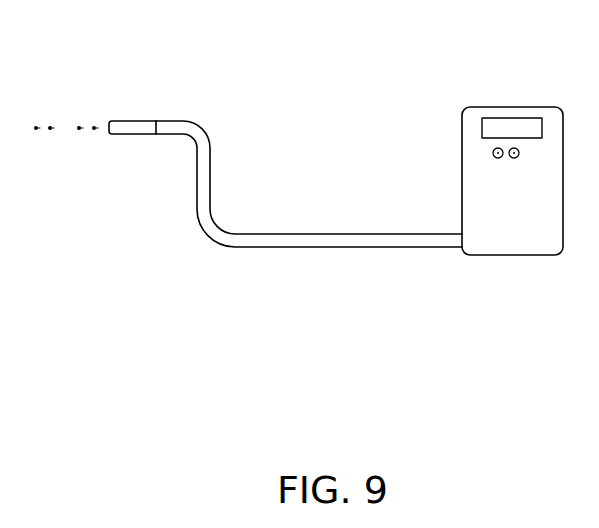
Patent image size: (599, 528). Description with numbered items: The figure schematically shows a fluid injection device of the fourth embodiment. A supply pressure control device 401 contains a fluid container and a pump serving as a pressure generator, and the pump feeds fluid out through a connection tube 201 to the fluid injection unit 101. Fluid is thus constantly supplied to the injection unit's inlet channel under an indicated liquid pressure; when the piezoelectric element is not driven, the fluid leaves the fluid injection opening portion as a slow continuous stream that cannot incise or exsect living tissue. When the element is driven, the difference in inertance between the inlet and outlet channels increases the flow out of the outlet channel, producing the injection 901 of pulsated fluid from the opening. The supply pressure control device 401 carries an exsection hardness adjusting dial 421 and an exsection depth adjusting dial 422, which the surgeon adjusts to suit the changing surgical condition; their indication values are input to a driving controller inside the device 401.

The fluid injection unit 101 is at (130, 126).
The connection tube 201 is at (210, 181).
The supply pressure control device 401 is at (471, 120).
The exsection hardness adjusting dial 421 is at (512, 159).
The exsection depth adjusting dial 422 is at (494, 151).
The injection of pulsated fluid 901 is at (50, 131).